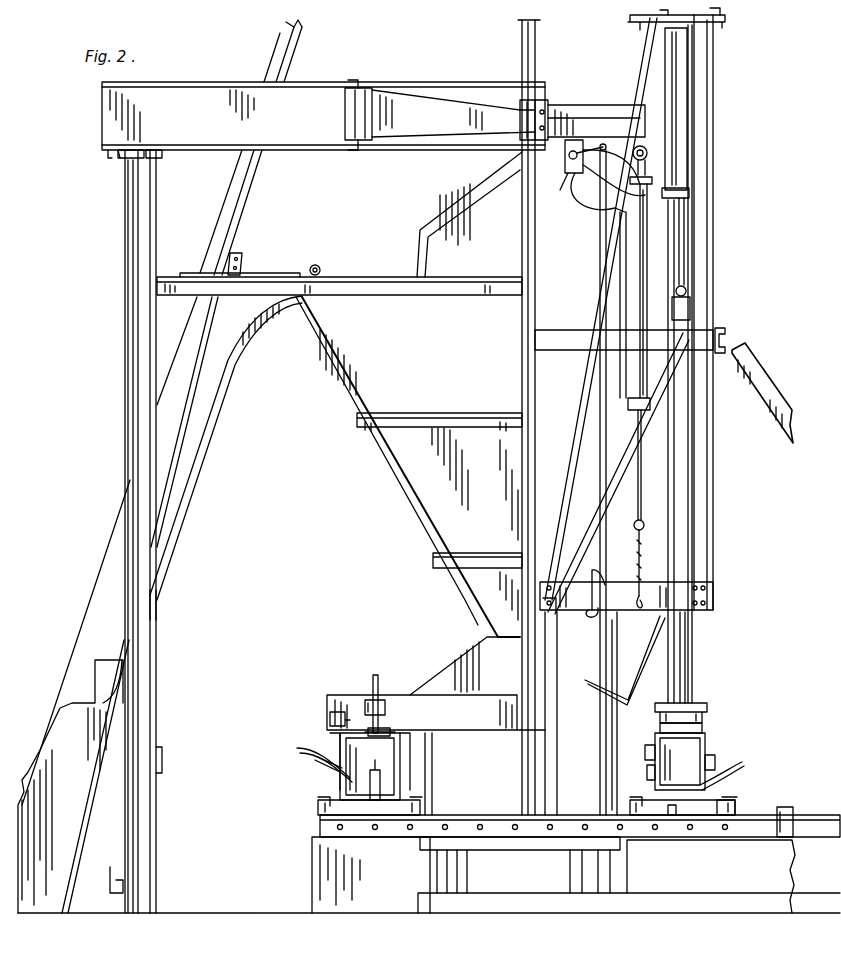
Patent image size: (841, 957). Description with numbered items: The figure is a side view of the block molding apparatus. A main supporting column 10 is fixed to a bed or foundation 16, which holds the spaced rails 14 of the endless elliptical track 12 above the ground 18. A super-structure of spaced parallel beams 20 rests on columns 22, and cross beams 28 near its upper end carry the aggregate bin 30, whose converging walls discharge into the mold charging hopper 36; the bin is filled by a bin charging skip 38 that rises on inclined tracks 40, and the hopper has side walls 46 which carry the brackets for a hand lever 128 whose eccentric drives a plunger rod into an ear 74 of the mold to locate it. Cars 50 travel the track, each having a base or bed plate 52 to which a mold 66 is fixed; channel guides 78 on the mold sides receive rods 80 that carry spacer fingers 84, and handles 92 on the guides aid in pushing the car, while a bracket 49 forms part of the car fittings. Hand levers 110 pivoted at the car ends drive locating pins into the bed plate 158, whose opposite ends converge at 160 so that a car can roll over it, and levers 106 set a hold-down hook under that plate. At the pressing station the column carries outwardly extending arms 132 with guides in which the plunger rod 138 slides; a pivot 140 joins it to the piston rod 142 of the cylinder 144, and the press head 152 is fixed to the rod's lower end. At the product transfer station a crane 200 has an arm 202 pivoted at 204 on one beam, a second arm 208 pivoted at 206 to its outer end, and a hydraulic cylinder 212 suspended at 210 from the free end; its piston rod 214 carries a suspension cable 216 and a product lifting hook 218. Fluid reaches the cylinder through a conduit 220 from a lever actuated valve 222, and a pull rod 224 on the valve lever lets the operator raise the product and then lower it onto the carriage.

The main supporting column 10 is at (597, 718).
The endless track 12 is at (442, 812).
The rails 14 is at (468, 825).
The bed or foundation 16 is at (372, 892).
The ground 18 is at (225, 910).
The beams 20 is at (313, 100).
The columns 22 is at (130, 378).
The cross beams 28 is at (283, 278).
The aggregate bin 30 is at (360, 345).
The mold charging hopper 36 is at (457, 667).
The bin charging skip 38 is at (62, 730).
The tracks 40 is at (250, 330).
The side walls 46 is at (430, 692).
The bracket 49 is at (335, 718).
The cars 50 is at (316, 789).
The base or bed plate 52 is at (382, 805).
The mold 66 is at (400, 756).
The ears 74 is at (397, 733).
The guides 78 is at (648, 768).
The rods 80 is at (410, 790).
The spacer fingers 84 is at (648, 748).
The handles 92 is at (718, 758).
The levers 106 is at (384, 774).
The levers 110 is at (308, 748).
The hand lever 128 is at (368, 688).
The arms 132 is at (553, 340).
The plunger rod 138 is at (688, 642).
The pivotal connection 140 is at (690, 292).
The piston rod 142 is at (686, 242).
The cylinder 144 is at (684, 167).
The press head 152 is at (690, 705).
The bed plate 158 is at (672, 818).
The converging ends 160 is at (733, 813).
The crane 200 is at (455, 96).
The arm 202 is at (472, 120).
The pivot 204 is at (355, 112).
The pivot 206 is at (548, 103).
The arm 208 is at (598, 120).
The suspension 210 is at (652, 136).
The hydraulic cylinder 212 is at (645, 250).
The piston rod 214 is at (641, 468).
The suspension cable 216 is at (641, 566).
The product lifting hook 218 is at (635, 665).
The conduit 220 is at (620, 268).
The lever actuated valve 222 is at (596, 183).
The pull rod 224 is at (592, 575).